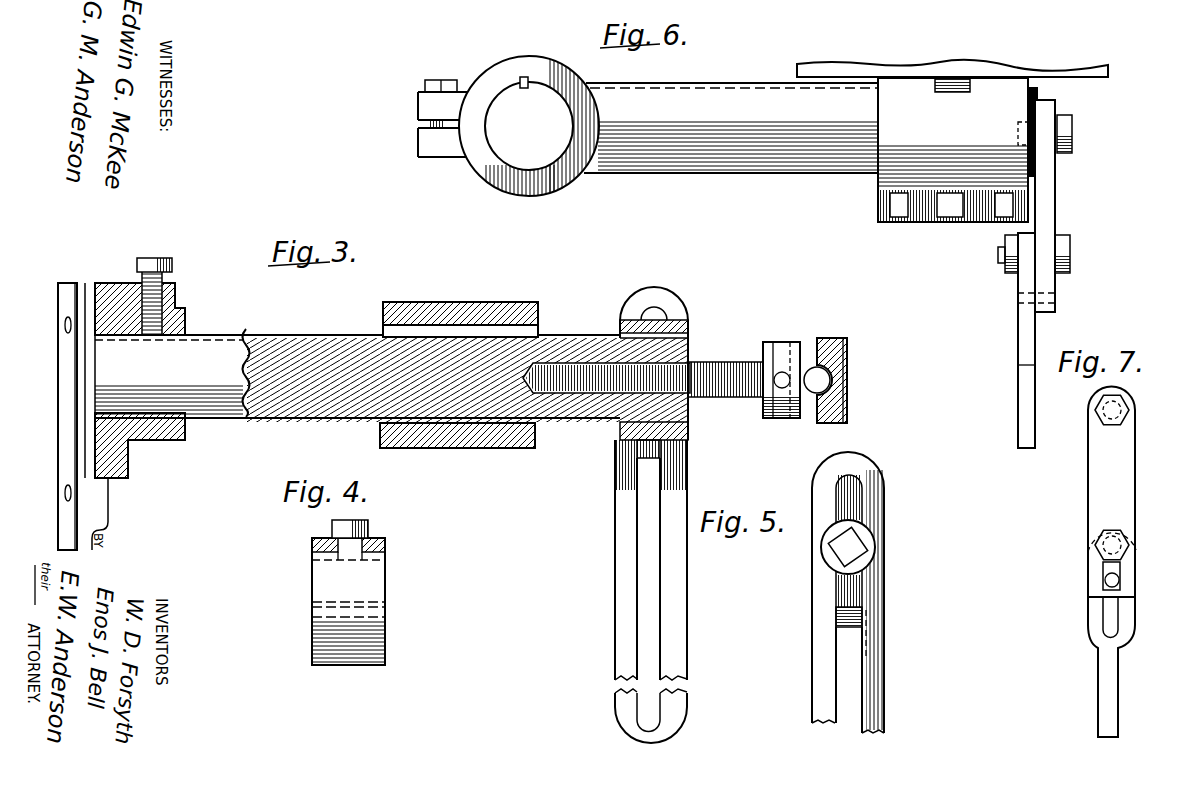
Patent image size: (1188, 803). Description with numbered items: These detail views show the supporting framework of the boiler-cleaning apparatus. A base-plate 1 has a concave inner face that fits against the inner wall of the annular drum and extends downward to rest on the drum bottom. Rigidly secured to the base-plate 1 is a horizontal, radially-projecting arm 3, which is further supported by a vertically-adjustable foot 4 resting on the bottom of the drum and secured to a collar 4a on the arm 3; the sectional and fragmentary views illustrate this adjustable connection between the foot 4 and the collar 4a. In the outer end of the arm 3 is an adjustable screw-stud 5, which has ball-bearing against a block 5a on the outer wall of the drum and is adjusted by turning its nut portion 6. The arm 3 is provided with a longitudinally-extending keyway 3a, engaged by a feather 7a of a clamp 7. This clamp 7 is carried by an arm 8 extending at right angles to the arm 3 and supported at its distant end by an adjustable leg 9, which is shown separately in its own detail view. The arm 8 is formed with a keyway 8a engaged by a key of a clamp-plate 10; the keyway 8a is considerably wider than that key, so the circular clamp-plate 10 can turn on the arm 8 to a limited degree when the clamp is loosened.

In FIG. 3, the base-plate 1 is at (110, 283).
In FIG. 3, the arm 3 is at (392, 378).
In FIG. 3, the keyway 3a is at (255, 328).
In FIG. 3, the foot 4 is at (690, 326).
In FIG. 4, the foot 4 is at (348, 601).
In FIG. 5, the foot 4 is at (857, 590).
In FIG. 3, the collar 4a is at (622, 456).
In FIG. 4, the collar 4a is at (386, 546).
In FIG. 5, the collar 4a is at (882, 512).
In FIG. 3, the screw-stud 5 is at (706, 368).
In FIG. 3, the block 5a is at (838, 340).
In FIG. 3, the nut portion 6 is at (781, 346).
In FIG. 3, the clamp 7 is at (418, 307).
In FIG. 6, the clamp 7 is at (490, 60).
In FIG. 3, the feather 7a is at (447, 330).
In FIG. 6, the feather 7a is at (523, 89).
In FIG. 6, the arm 8 is at (731, 128).
In FIG. 6, the keyway 8a is at (656, 86).
In FIG. 6, the leg 9 is at (1057, 186).
In FIG. 7, the leg 9 is at (1112, 562).
In FIG. 6, the clamp-plate 10 is at (958, 150).